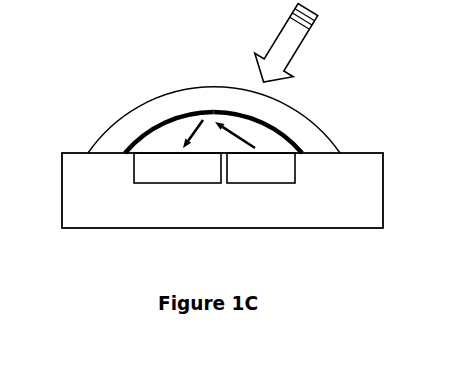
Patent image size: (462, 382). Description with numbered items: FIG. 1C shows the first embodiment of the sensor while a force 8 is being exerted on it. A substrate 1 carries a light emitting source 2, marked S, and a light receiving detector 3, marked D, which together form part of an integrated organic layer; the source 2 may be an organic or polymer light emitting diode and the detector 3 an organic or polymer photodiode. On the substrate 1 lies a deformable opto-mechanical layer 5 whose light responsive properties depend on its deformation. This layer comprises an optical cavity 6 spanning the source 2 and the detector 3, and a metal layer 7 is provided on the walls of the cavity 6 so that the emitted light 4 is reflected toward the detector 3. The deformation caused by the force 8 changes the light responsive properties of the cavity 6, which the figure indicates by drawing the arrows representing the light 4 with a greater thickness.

The substrate 1 is at (342, 177).
The light emitting source 2 is at (258, 186).
The light receiving detector 3 is at (177, 186).
The light 4 is at (243, 133).
The deformable opto-mechanical layer 5 is at (153, 115).
The optical cavity 6 is at (153, 145).
The metal layer 7 is at (295, 140).
The force 8 is at (273, 33).